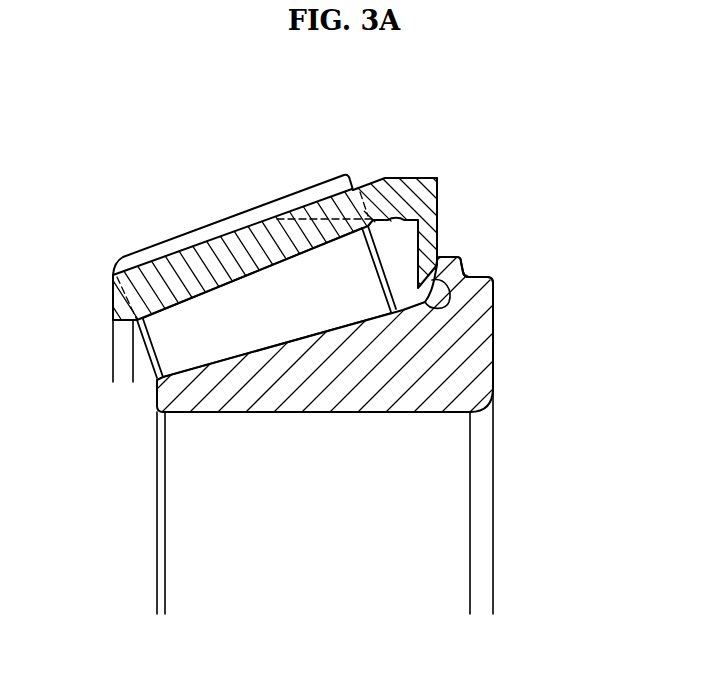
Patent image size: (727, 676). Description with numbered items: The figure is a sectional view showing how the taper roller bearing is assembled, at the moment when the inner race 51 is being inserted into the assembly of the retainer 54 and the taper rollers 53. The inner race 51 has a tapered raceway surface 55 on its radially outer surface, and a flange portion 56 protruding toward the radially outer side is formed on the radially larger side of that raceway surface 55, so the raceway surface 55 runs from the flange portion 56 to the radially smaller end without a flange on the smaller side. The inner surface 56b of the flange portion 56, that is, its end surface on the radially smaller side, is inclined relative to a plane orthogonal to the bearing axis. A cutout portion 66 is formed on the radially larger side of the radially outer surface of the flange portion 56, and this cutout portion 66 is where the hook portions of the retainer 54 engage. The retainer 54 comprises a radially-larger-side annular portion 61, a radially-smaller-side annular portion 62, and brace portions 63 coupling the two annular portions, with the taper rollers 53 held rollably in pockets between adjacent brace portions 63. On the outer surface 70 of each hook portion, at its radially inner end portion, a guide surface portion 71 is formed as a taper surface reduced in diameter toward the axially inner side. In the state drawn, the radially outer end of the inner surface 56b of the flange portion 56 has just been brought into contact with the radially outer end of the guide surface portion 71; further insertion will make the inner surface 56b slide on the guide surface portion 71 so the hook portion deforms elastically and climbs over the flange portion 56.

The inner race 51 is at (508, 372).
The taper roller 53 is at (283, 200).
The retainer 54 is at (433, 171).
The raceway surface 55 is at (290, 345).
The flange portion 56 is at (461, 248).
The inner surface of the flange portion 56b is at (425, 300).
The radially-larger-side annular portion 61 is at (403, 190).
The radially-smaller-side annular portion 62 is at (112, 292).
The brace portion 63 is at (225, 247).
The cutout portion 66 is at (477, 277).
The outer surface of the hook portion 70 is at (437, 198).
The guide surface portion 71 is at (448, 297).